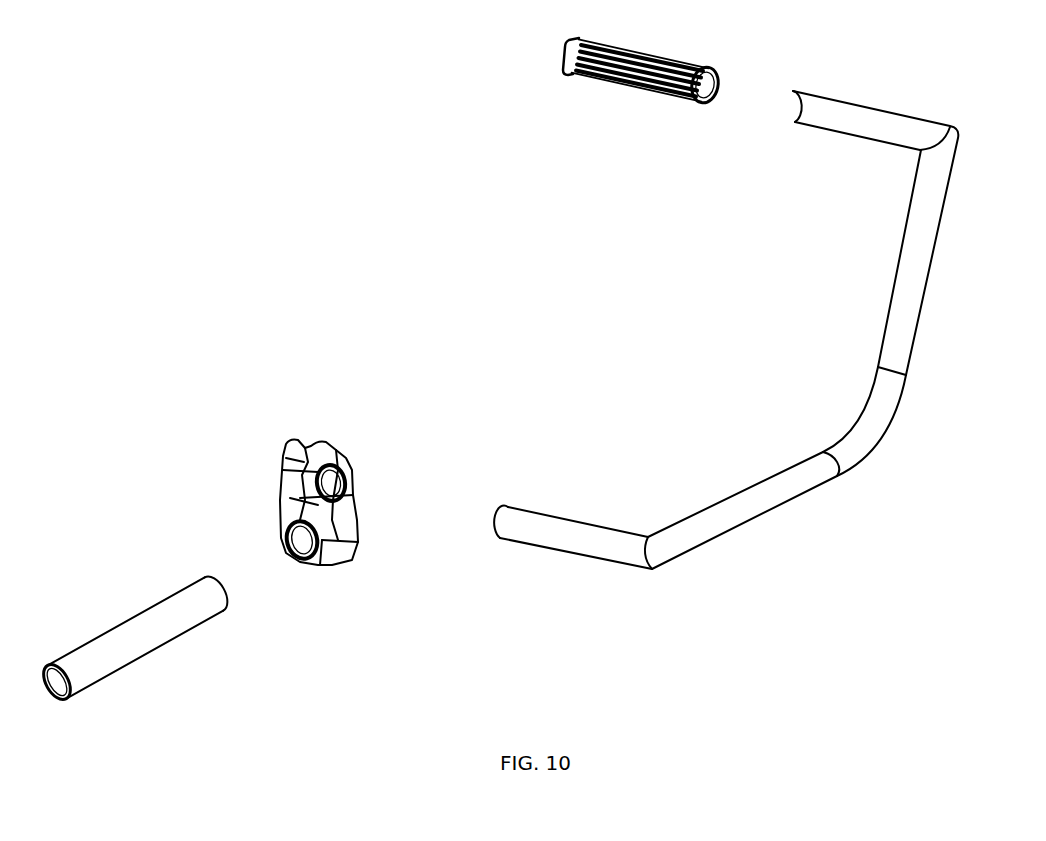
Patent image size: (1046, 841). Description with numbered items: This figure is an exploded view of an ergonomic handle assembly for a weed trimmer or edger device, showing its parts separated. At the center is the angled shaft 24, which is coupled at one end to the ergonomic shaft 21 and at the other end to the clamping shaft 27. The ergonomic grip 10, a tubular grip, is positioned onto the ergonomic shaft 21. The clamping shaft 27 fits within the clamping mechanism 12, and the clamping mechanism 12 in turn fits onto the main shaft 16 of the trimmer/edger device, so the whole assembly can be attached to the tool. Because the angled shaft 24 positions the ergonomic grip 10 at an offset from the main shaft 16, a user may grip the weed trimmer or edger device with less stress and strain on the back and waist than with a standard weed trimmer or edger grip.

The ergonomic grip 10 is at (641, 96).
The clamping mechanism 12 is at (328, 571).
The main shaft 16 is at (157, 658).
The ergonomic shaft 21 is at (813, 136).
The angled shaft 24 is at (845, 486).
The clamping shaft 27 is at (564, 563).